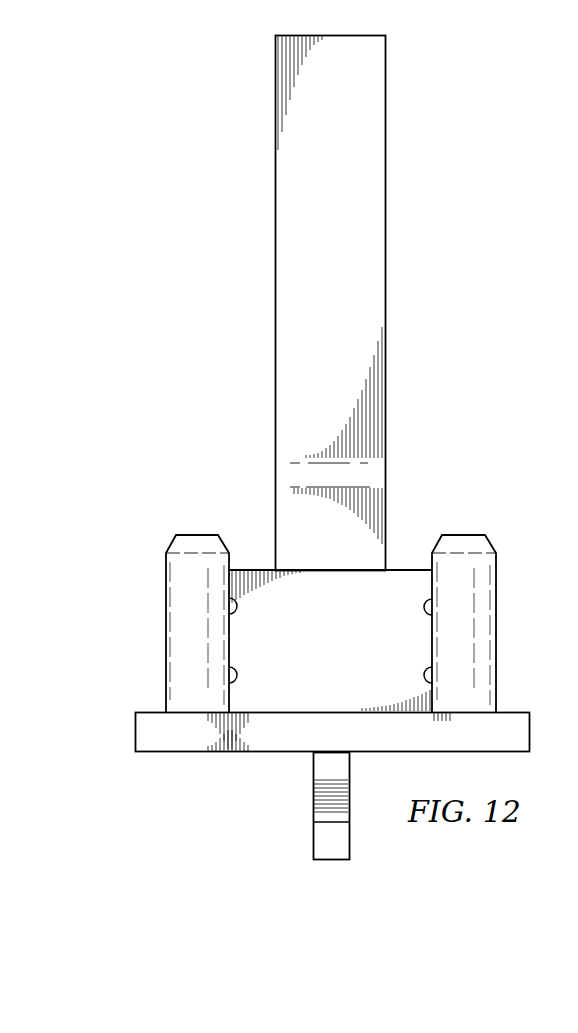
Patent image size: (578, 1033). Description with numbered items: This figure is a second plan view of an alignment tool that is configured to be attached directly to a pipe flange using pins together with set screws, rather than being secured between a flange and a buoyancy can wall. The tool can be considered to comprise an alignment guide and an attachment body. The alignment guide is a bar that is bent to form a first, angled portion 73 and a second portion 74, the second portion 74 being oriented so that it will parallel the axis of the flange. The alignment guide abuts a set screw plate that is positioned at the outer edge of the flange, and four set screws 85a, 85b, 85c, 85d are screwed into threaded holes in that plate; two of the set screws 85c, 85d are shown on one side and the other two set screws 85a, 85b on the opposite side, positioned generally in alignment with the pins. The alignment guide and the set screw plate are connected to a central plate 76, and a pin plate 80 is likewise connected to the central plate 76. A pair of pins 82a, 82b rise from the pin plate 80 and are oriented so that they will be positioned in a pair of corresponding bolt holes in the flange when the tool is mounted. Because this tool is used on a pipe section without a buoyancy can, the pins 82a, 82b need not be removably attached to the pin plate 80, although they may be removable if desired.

The first angled portion 73 is at (386, 263).
The second portion 74 is at (386, 501).
The central plate 76 is at (312, 815).
The pin plate 80 is at (183, 754).
The pin 82a is at (490, 548).
The pin 82b is at (170, 547).
The set screw 85a is at (422, 603).
The set screw 85b is at (422, 671).
The set screw 85c is at (240, 604).
The set screw 85d is at (240, 673).